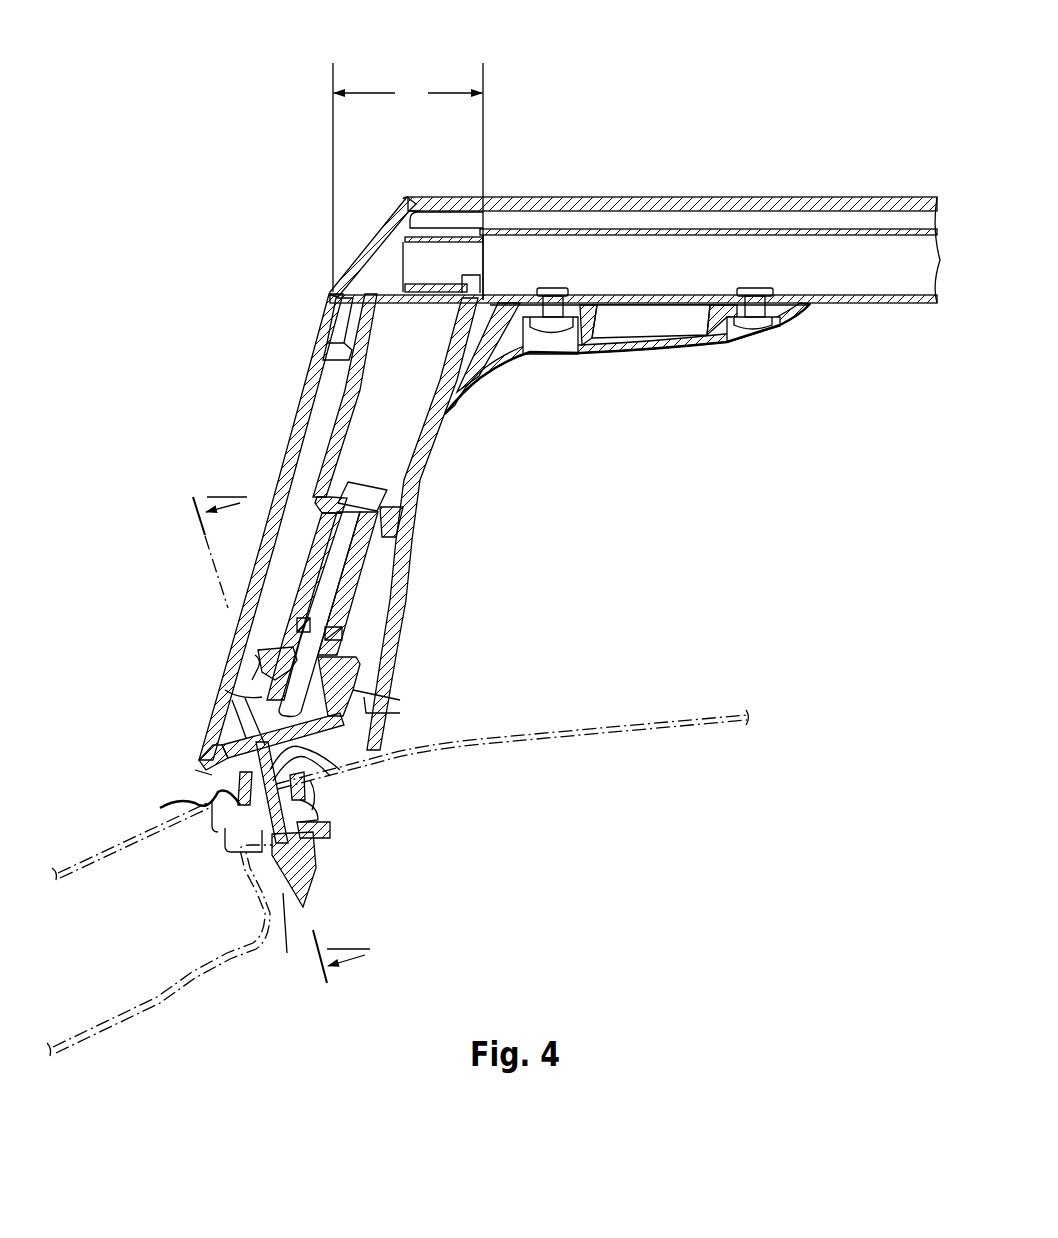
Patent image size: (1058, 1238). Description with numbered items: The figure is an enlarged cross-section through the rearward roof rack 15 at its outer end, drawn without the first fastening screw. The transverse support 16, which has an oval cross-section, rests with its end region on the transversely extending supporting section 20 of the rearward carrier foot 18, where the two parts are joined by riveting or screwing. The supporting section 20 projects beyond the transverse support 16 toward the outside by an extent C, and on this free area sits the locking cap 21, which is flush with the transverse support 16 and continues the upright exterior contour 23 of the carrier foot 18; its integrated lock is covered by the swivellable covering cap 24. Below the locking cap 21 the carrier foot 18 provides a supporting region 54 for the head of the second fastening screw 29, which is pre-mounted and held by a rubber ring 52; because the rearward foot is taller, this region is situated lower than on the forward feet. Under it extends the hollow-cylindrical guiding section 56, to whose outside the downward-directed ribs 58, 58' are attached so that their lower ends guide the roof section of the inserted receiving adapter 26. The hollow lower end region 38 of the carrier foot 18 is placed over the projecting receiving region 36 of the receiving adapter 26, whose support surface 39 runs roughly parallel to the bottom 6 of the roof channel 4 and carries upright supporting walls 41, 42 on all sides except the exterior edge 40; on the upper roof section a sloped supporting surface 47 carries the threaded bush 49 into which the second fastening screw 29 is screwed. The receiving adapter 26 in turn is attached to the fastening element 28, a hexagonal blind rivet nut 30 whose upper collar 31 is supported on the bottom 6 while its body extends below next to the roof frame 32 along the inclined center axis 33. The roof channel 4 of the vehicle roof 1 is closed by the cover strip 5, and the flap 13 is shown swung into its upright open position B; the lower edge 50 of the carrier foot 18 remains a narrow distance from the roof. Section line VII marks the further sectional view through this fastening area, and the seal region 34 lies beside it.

The vehicle roof 1 is at (729, 710).
The roof channel 4 is at (237, 830).
The cover strip 5 is at (330, 762).
The bottom 6 is at (318, 828).
The flap 13 is at (308, 797).
The rearward roof rack 15 is at (577, 125).
The transverse support 16 is at (691, 197).
The carrier foot 18 is at (463, 413).
The supporting section 20 is at (812, 322).
The locking cap 21 is at (462, 195).
The upright exterior contour 23 is at (295, 404).
The covering cap 24 is at (375, 240).
The receiving adapter 26 is at (358, 727).
The fastening element 28 is at (322, 882).
The second fastening screw 29 is at (335, 590).
The hexagonal blind rivet nut 30 is at (275, 865).
The upper collar 31 is at (310, 822).
The roof frame 32 is at (246, 893).
The center axis 33 is at (213, 577).
The seal 34 is at (179, 810).
The projecting receiving region 36 is at (358, 689).
The hollow lower end region 38 is at (262, 697).
The support surface 39 is at (237, 700).
The exterior edge 40 is at (205, 767).
The supporting wall 41 is at (370, 708).
The supporting wall 42 is at (225, 690).
The supporting surface 47 is at (274, 642).
The threaded bush 49 is at (262, 652).
The lower edge 50 is at (207, 807).
The rubber ring 52 is at (347, 630).
The supporting region 54 is at (398, 498).
The guiding section 56 is at (368, 540).
The rib 58 is at (307, 403).
The rib 58' is at (377, 606).
The open position B is at (242, 773).
The extent C is at (408, 181).
The section line VII— VII is at (281, 723).